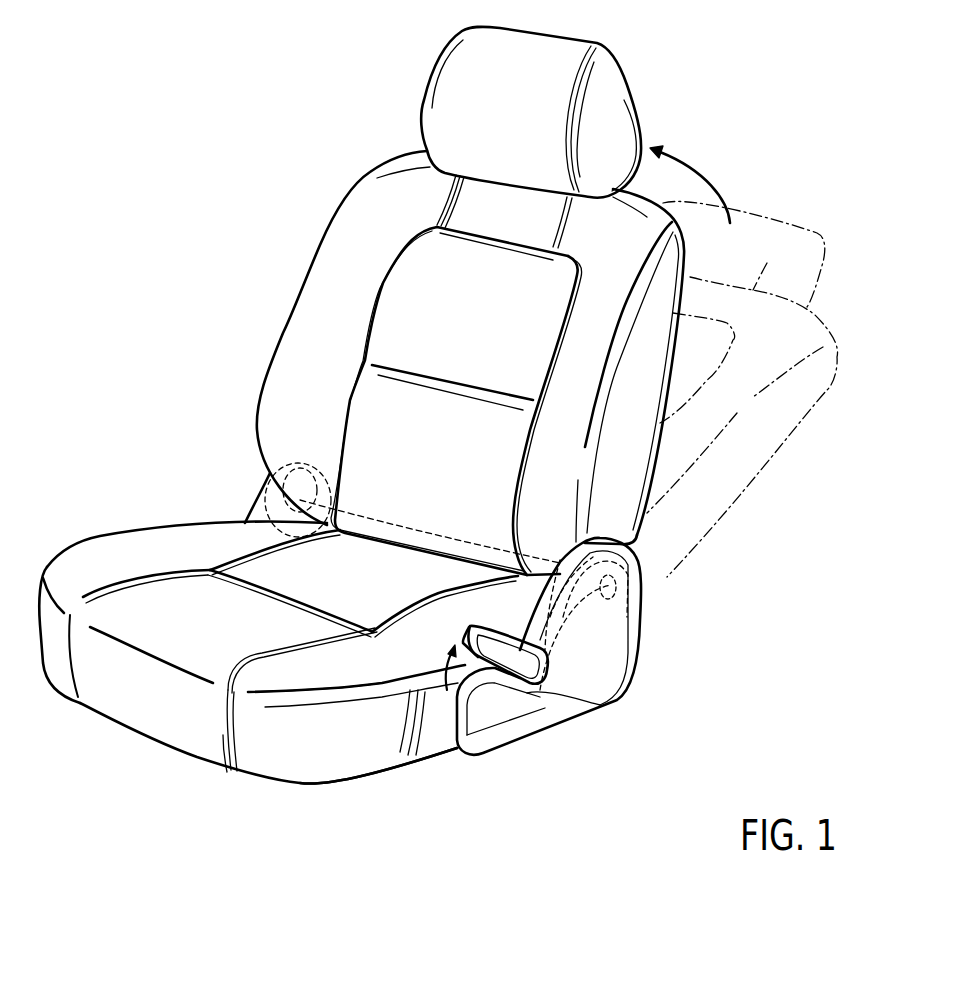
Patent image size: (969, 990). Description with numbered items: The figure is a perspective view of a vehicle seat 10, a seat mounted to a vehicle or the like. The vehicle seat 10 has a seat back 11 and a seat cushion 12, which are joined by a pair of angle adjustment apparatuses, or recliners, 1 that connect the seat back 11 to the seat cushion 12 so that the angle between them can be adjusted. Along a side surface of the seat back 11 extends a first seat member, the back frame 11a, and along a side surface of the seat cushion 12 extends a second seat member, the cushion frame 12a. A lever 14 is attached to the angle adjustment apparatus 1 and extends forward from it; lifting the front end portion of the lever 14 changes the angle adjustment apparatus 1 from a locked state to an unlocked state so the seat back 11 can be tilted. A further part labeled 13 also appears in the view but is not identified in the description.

The vehicle seat 10 is at (296, 178).
The seat back 11 is at (266, 350).
The first seat member (back frame) 11a is at (630, 447).
The seat cushion 12 is at (143, 512).
The second seat member (cushion frame) 12a is at (370, 733).
The lower portion of seat back 13 is at (422, 537).
The lever 14 is at (488, 634).
The angle adjustment apparatus (recliner) 1 is at (300, 462).